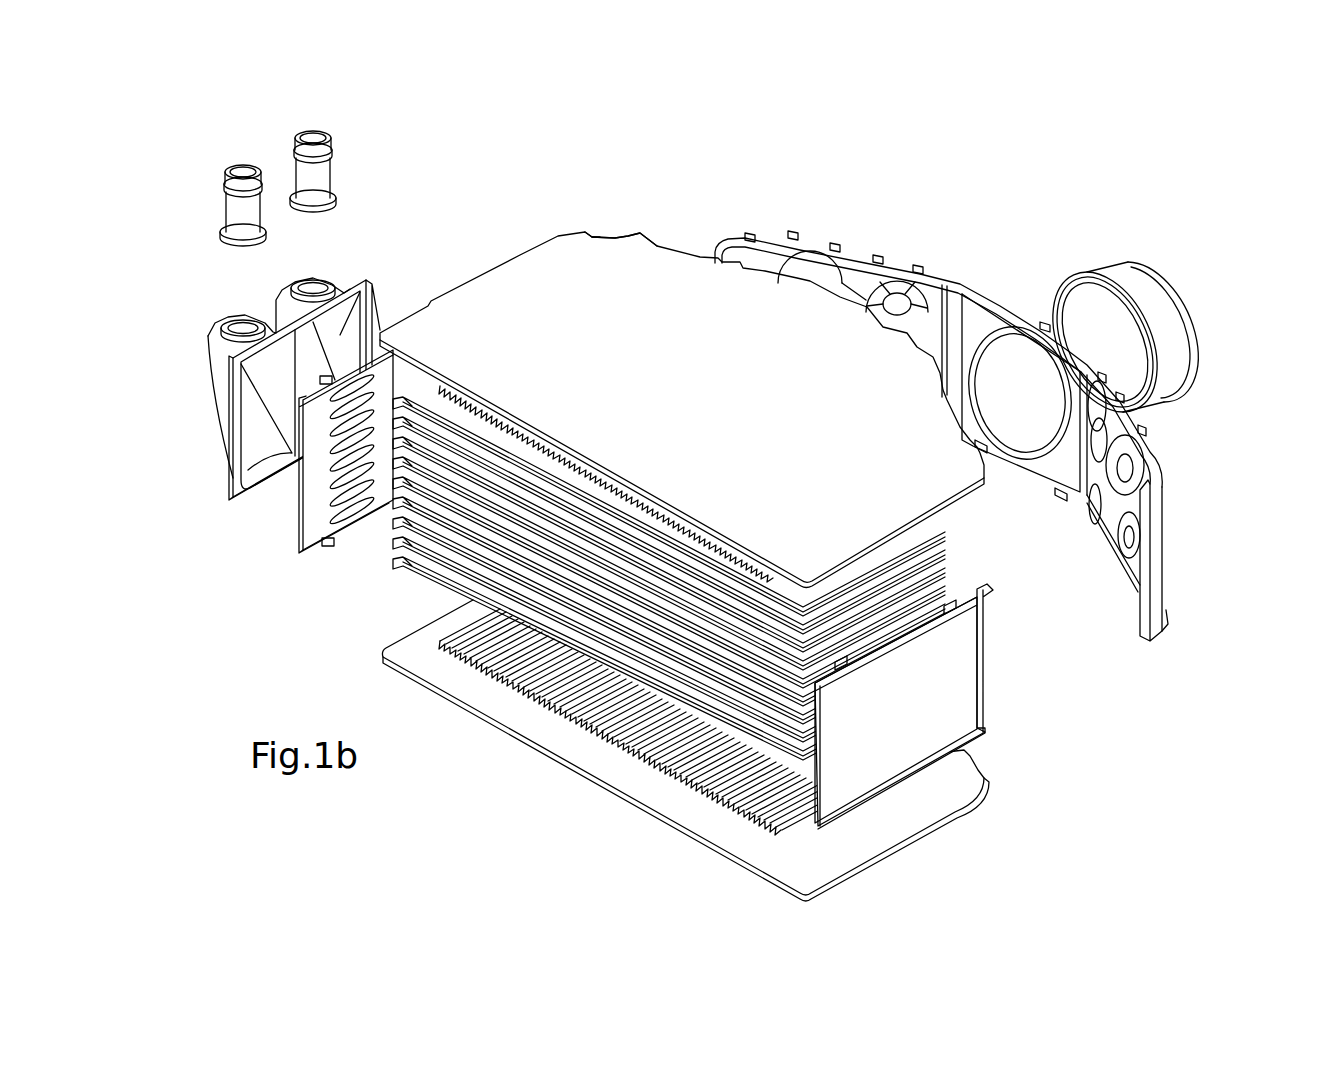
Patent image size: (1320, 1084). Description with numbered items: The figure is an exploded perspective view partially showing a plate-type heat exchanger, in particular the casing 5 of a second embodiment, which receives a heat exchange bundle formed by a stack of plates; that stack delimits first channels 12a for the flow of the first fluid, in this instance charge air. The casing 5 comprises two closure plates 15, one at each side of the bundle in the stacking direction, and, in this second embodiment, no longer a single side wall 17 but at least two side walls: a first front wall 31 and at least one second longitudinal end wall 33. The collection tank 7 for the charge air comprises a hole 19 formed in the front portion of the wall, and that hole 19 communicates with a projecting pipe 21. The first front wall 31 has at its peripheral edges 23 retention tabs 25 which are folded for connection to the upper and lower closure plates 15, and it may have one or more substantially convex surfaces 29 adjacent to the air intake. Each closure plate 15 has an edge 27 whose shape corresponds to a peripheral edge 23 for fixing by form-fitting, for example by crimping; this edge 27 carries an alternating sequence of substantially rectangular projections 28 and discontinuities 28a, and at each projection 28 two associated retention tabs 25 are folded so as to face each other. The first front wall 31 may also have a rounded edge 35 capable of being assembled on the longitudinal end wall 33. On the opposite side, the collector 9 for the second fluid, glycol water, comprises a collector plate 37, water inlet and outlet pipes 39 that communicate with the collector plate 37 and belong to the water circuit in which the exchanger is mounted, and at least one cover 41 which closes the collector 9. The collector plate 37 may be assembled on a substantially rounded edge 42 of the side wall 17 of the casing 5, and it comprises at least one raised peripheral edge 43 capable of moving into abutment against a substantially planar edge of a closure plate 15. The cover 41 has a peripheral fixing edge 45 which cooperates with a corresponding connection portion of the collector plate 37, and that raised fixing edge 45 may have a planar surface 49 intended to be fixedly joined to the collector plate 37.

The casing 5 is at (810, 528).
The collection tank 7 is at (1153, 328).
The collector 9 is at (271, 385).
The first channels 12a is at (411, 414).
The closure plates 15 is at (684, 528).
The side wall 17 is at (999, 409).
The hole 19 is at (1006, 404).
The pipe 21 is at (1203, 332).
The peripheral edges 23 is at (1041, 397).
The retention tabs 25 is at (327, 550).
The edge 27 is at (938, 328).
The projections 28 is at (635, 240).
The discontinuities 28a is at (598, 234).
The convex surfaces 29 is at (890, 280).
The first front wall 31 is at (1029, 290).
The second longitudinal end wall 33 is at (965, 717).
The rounded edge 35 is at (1160, 537).
The collector plate 37 is at (317, 517).
The water inlet and outlet pipes 39 is at (240, 212).
The cover 41 is at (363, 287).
The rounded edge 42 is at (747, 240).
The raised peripheral edge 43 is at (377, 330).
The peripheral fixing edge 45 is at (231, 352).
The planar surface 49 is at (231, 392).